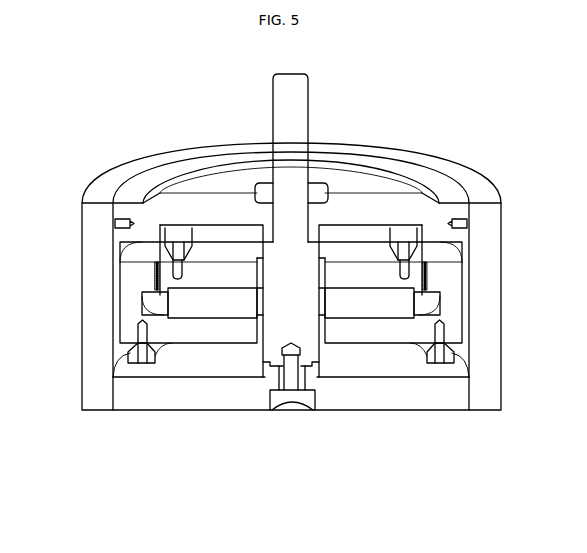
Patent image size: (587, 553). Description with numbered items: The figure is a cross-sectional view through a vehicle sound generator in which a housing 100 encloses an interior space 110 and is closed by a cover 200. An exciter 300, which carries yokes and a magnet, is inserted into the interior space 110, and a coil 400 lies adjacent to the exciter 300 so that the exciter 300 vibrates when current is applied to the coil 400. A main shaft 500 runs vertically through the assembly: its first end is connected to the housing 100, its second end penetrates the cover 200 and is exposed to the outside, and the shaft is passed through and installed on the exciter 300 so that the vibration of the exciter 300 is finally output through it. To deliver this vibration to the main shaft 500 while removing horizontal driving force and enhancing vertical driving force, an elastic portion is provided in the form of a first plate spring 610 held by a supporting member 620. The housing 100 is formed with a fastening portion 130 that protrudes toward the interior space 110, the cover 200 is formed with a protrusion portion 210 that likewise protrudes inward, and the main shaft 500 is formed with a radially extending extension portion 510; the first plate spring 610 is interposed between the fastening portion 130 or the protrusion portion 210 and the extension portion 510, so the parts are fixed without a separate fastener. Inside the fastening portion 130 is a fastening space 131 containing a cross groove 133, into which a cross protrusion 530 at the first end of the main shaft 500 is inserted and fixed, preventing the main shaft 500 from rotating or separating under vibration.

The housing 100 is at (488, 331).
The interior space 110 is at (214, 361).
The fastening portion 130 is at (314, 368).
The fastening space 131 is at (271, 366).
The cross groove 133 is at (297, 398).
The cover 200 is at (392, 186).
The protrusion portion 210 is at (268, 238).
The exciter 300 is at (478, 310).
The coil 400 is at (157, 279).
The main shaft 500 is at (333, 97).
The extension portion 510 is at (267, 253).
The cross protrusion 530 is at (285, 370).
The first plate spring 610 is at (404, 234).
The supporting member 620 is at (420, 254).